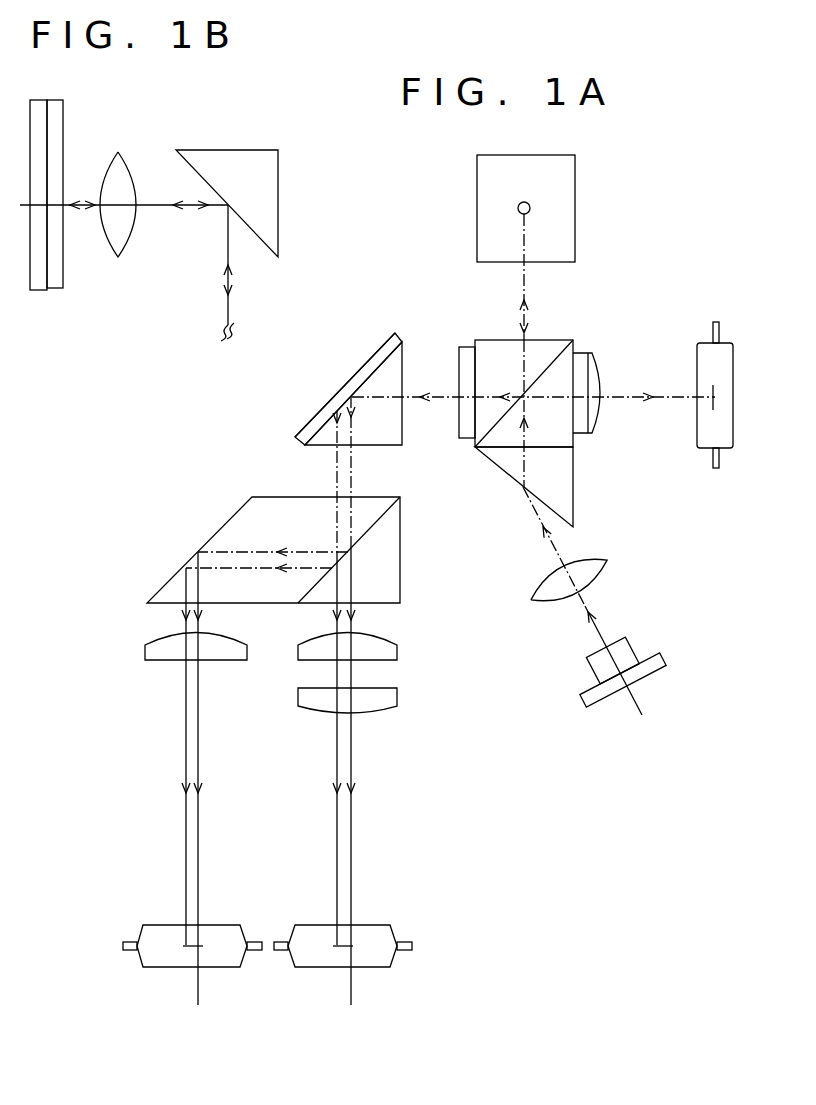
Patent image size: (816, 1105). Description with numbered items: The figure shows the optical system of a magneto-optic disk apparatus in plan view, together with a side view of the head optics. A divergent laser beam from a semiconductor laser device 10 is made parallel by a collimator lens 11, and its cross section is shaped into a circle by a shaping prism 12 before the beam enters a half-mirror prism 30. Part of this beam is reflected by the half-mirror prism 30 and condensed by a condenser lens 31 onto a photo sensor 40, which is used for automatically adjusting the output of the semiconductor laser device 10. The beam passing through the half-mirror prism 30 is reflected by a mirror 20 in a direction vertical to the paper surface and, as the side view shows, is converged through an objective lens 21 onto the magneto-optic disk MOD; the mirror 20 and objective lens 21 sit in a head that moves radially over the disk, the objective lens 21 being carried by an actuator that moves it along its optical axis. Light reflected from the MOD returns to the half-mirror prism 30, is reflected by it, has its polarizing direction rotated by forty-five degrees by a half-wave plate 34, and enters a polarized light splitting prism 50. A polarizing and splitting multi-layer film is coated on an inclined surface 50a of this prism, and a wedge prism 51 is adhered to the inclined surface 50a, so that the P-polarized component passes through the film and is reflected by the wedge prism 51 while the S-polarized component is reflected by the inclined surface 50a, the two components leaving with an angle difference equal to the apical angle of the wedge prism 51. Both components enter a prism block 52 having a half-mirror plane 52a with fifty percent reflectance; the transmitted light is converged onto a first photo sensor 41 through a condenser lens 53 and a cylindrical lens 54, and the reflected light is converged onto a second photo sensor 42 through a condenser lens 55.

In FIG. 1A, the semiconductor laser device 10 is at (585, 672).
In FIG. 1A, the collimator lens 11 is at (540, 600).
In FIG. 1A, the shaping prism 12 is at (565, 483).
In FIG. 1B, the mirror 20 is at (246, 158).
In FIG. 1A, the mirror 20 is at (565, 235).
In FIG. 1B, the objective lens 21 is at (123, 160).
In FIG. 1A, the half-mirror prism 30 is at (555, 345).
In FIG. 1A, the condenser lens 31 is at (593, 363).
In FIG. 1A, the λ/2 plate 34 is at (465, 348).
In FIG. 1A, the photo sensor 40 is at (700, 348).
In FIG. 1A, the first photo sensor 41 is at (383, 925).
In FIG. 1A, the second photo sensor 42 is at (153, 925).
In FIG. 1A, the polarized light splitting prism 50 is at (398, 428).
In FIG. 1A, the inclined surface 50a is at (308, 428).
In FIG. 1A, the wedge prism 51 is at (362, 370).
In FIG. 1A, the prism block 52 is at (222, 535).
In FIG. 1A, the half-mirror plane 52a is at (387, 520).
In FIG. 1A, the condenser lens 53 is at (397, 653).
In FIG. 1A, the cylindrical lens 54 is at (392, 700).
In FIG. 1A, the condenser lens 55 is at (145, 647).
In FIG. 1B, the magneto-optic disk MOD is at (63, 270).